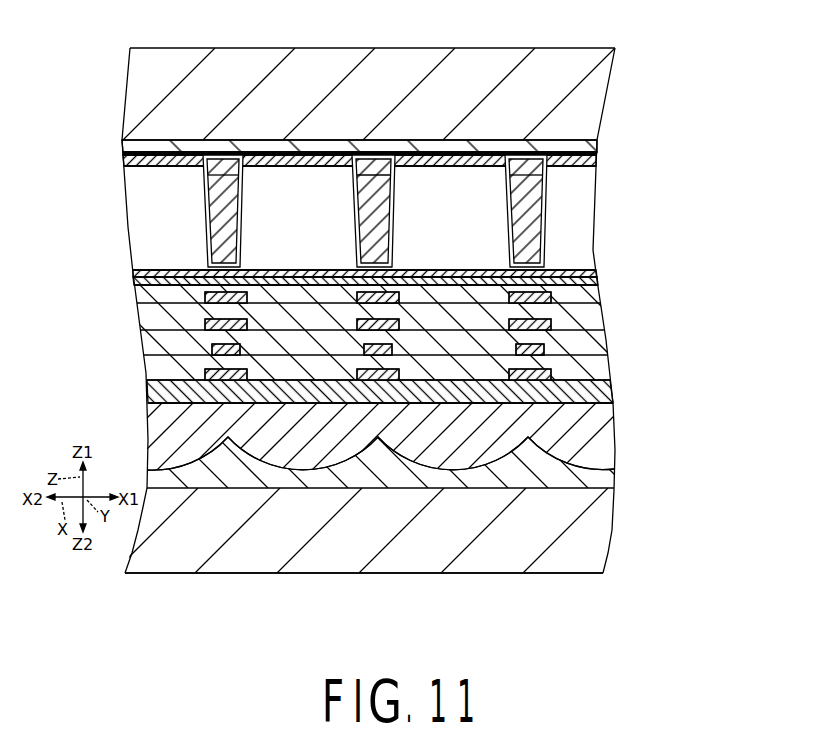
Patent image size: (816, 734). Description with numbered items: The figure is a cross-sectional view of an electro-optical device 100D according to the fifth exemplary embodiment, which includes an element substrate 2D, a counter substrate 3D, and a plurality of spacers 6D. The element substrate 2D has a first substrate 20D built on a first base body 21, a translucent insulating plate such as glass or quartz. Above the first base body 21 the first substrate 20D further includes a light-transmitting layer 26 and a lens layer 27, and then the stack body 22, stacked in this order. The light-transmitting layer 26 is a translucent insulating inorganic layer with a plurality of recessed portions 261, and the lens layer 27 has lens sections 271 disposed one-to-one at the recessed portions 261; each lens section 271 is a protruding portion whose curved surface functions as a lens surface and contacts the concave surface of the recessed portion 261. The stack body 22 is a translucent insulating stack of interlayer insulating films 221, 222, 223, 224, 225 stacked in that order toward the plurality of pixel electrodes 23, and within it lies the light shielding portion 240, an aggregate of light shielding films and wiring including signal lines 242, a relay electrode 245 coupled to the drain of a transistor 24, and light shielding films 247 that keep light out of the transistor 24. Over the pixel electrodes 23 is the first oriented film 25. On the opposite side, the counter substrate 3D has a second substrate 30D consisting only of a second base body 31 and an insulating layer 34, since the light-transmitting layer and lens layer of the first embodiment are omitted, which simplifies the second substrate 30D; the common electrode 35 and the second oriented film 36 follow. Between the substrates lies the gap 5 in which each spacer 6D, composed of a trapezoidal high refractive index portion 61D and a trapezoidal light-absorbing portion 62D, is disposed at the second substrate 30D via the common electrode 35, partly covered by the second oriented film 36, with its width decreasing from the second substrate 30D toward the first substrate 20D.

The electro-optical device 100D is at (643, 66).
The second base body 31 is at (583, 112).
The insulating layer 34 is at (582, 136).
The common electrode 35 is at (582, 150).
The second oriented film 36 is at (583, 158).
The second substrate 30D is at (668, 97).
The counter substrate 3D is at (710, 95).
The gap layer 5 is at (582, 233).
The spacer 6D is at (337, 211).
The light-absorbing portion 62D is at (518, 181).
The high refractive index portion 61D is at (522, 225).
The pixel electrode 23 is at (443, 270).
The first oriented film 25 is at (598, 272).
The interlayer insulating film 225 is at (600, 297).
The interlayer insulating film 224 is at (600, 322).
The interlayer insulating film 223 is at (602, 345).
The interlayer insulating film 222 is at (603, 360).
The interlayer insulating film 221 is at (598, 390).
The stack body 22 is at (662, 288).
The element substrate 2D is at (735, 245).
The first substrate 20D is at (692, 327).
The lens layer 27 is at (615, 423).
The light-transmitting layer 26 is at (615, 470).
The first base body 21 is at (590, 527).
The light shielding portion 240 is at (79, 287).
The relay electrode 245 is at (205, 297).
The signal line 242 is at (205, 323).
The light shielding film 247 is at (205, 372).
The transistor 24 is at (245, 381).
The lens section 271 is at (480, 588).
The recessed portion 261 is at (530, 588).